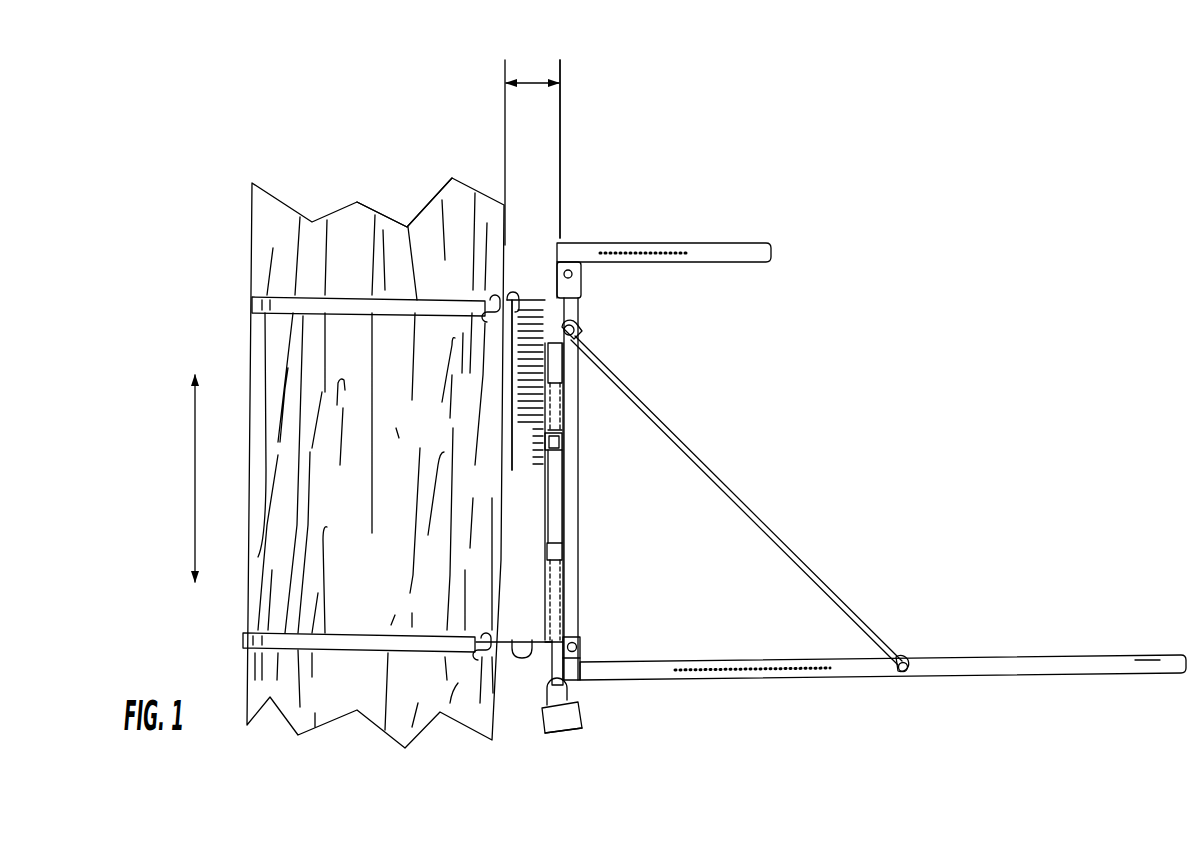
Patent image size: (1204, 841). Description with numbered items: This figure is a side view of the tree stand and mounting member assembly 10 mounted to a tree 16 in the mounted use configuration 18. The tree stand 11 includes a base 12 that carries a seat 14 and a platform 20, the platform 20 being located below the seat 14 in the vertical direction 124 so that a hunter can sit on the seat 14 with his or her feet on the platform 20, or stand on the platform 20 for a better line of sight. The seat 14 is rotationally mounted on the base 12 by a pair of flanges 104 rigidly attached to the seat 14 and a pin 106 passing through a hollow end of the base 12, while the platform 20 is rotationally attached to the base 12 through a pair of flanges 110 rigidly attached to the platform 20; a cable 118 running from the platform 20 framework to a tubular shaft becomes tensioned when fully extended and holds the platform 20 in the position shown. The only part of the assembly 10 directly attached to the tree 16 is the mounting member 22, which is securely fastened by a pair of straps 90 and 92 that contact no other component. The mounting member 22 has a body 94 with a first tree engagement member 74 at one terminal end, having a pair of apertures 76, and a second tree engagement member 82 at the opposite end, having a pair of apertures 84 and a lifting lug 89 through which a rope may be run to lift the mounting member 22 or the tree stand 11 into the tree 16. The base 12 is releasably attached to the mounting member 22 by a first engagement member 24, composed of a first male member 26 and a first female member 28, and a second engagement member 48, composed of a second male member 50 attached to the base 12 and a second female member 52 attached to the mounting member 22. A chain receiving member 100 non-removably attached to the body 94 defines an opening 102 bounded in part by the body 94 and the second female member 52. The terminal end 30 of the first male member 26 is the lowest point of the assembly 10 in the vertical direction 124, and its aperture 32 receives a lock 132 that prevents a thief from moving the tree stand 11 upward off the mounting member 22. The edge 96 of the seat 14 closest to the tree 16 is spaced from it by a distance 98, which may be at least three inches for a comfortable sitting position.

The tree stand and mounting member assembly 10 is at (811, 475).
The tree stand 11 is at (878, 508).
The base 12 is at (571, 521).
The seat 14 is at (727, 248).
The tree 16 is at (262, 381).
The mounted use configuration 18 is at (641, 215).
The platform 20 is at (1053, 656).
The mounting member 22 is at (508, 480).
The first engagement member 24 is at (566, 603).
The first male member 26 is at (562, 660).
The first female member 28 is at (560, 628).
The terminal end 30 is at (555, 691).
The aperture 32 is at (570, 684).
The second engagement member 48 is at (580, 376).
The second male member 50 is at (577, 326).
The second female member 52 is at (558, 416).
The first tree engagement member 74 is at (508, 296).
The apertures 76 is at (487, 298).
The second tree engagement member 82 is at (517, 640).
The apertures 84 is at (510, 632).
The lifting lug 89 is at (540, 648).
The strap 90 is at (409, 226).
The strap 92 is at (363, 630).
The body 94 is at (508, 523).
The edge 96 is at (540, 213).
The distance 98 is at (533, 82).
The chain receiving member 100 is at (556, 452).
The opening 102 is at (561, 441).
The flanges 104 is at (578, 292).
The pin 106 is at (548, 246).
The flanges 110 is at (575, 670).
The cable 118 is at (726, 488).
The vertical direction 124 is at (192, 490).
The lock 132 is at (553, 736).